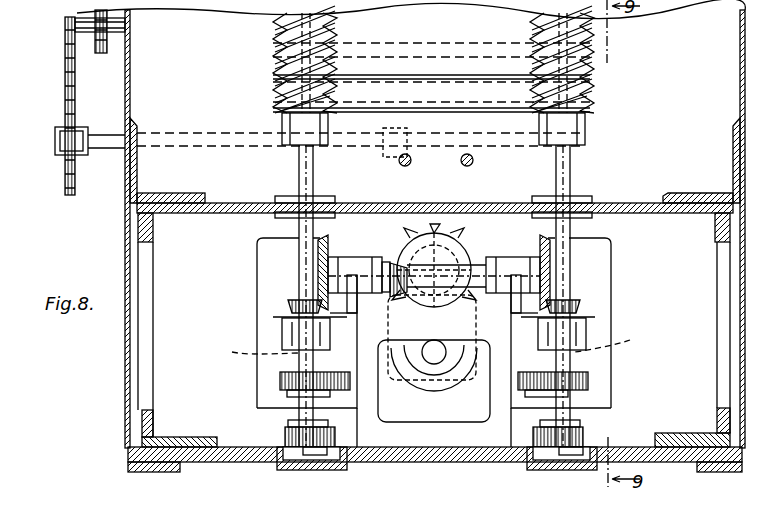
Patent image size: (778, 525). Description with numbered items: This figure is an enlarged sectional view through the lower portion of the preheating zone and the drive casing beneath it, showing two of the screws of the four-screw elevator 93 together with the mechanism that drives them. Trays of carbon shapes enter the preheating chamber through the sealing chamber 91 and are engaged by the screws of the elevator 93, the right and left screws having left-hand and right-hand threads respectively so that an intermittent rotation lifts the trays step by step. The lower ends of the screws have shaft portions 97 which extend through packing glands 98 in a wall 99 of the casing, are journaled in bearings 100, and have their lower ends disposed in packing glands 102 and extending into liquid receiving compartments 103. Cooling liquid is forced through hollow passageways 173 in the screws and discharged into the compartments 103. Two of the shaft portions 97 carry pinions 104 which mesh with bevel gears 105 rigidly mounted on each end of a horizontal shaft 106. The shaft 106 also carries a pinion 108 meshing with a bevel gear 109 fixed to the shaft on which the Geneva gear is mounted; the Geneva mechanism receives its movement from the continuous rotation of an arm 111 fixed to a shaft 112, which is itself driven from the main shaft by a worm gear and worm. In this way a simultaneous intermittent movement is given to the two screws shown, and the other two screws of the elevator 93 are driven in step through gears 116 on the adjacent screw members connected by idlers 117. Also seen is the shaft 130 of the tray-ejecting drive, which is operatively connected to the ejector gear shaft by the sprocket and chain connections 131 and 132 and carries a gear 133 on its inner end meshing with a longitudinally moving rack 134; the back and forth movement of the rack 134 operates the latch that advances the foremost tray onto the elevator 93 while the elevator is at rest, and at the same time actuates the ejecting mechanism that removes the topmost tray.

The sealing chamber 91 is at (500, 98).
The four-screw elevator 93 is at (285, 62).
The shaft portions 97 is at (313, 163).
The packing glands 98 is at (288, 197).
The wall 99 is at (230, 213).
The bearings 100 is at (277, 335).
The packing glands 102 is at (288, 432).
The liquid receiving compartments 103 is at (303, 460).
The pinions 104 is at (288, 306).
The bevel gears 105 is at (320, 265).
The shaft 106 is at (478, 264).
The pinion 108 is at (398, 247).
The bevel gear 109 is at (436, 233).
The arm 111 is at (425, 378).
The shaft 112 is at (436, 354).
The gears 116 is at (280, 382).
The idlers 117 is at (358, 418).
The shaft 130 is at (172, 135).
The sprocket and chain connection 131 is at (99, 57).
The sprocket and chain connection 132 is at (71, 105).
The gear 133 is at (410, 142).
The rack 134 is at (406, 166).
The hollow passageways 173 is at (436, 343).